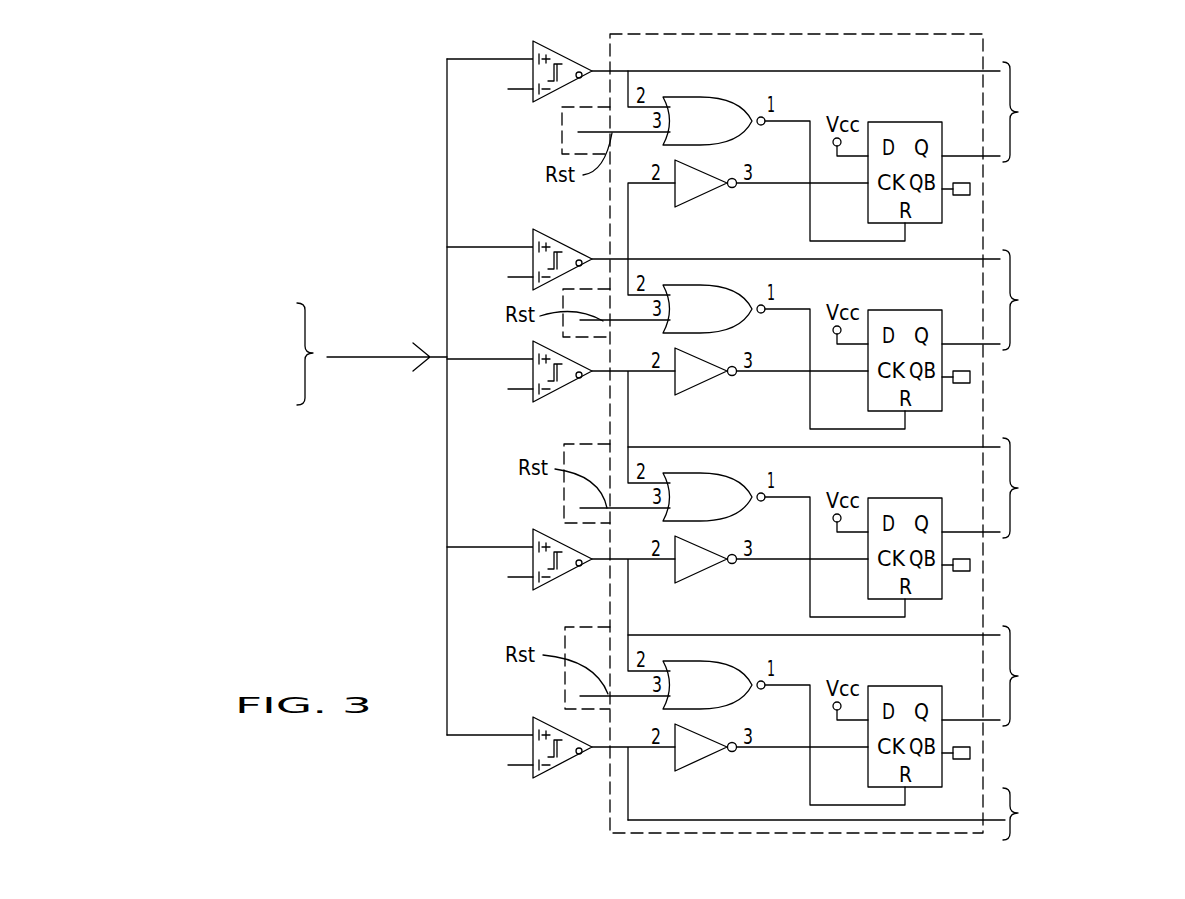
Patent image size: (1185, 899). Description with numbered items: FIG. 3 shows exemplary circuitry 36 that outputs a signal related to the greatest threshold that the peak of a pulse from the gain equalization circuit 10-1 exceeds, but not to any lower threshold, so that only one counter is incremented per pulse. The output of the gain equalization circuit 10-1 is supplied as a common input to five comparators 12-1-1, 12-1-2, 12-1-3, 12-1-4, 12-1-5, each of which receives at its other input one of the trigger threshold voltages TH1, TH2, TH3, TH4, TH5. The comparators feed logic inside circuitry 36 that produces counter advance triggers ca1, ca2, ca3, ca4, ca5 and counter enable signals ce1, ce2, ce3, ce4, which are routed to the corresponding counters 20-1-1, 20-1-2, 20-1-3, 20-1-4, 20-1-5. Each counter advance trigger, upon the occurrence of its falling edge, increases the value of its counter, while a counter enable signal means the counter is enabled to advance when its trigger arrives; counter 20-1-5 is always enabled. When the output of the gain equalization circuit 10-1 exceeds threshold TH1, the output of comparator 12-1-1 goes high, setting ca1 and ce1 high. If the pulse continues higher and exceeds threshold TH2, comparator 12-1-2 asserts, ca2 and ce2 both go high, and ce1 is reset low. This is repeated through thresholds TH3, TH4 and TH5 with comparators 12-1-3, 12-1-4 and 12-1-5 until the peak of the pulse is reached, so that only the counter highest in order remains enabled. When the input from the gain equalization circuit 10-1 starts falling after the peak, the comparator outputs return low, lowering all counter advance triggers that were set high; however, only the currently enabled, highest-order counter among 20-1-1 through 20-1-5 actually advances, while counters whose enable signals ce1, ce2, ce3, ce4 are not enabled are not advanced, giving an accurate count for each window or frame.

The circuitry 36 is at (983, 51).
The comparator 12-1-1 is at (552, 98).
The comparator 12-1-2 is at (560, 243).
The comparator 12-1-3 is at (557, 398).
The comparator 12-1-4 is at (548, 533).
The comparator 12-1-5 is at (552, 720).
The gain equalization circuit 10-1 is at (305, 365).
The counter 20-1-1 is at (1078, 112).
The counter 20-1-2 is at (1078, 300).
The counter 20-1-3 is at (1078, 488).
The counter 20-1-4 is at (1078, 676).
The counter 20-1-5 is at (1078, 811).
The threshold TH1 is at (499, 90).
The threshold TH2 is at (499, 278).
The threshold TH3 is at (499, 390).
The threshold TH4 is at (499, 578).
The threshold TH5 is at (499, 766).
The counter advance trigger ca1 is at (840, 71).
The counter advance trigger ca2 is at (840, 259).
The counter advance trigger ca3 is at (840, 447).
The counter advance trigger ca4 is at (840, 635).
The counter advance trigger ca5 is at (693, 818).
The counter enable signal ce1 is at (988, 157).
The counter enable signal ce2 is at (988, 345).
The counter enable signal ce3 is at (988, 533).
The counter enable signal ce4 is at (988, 721).